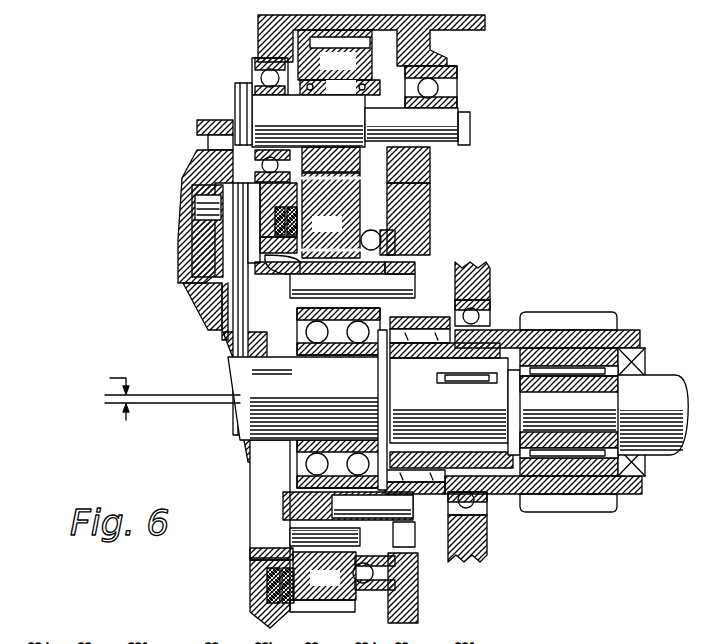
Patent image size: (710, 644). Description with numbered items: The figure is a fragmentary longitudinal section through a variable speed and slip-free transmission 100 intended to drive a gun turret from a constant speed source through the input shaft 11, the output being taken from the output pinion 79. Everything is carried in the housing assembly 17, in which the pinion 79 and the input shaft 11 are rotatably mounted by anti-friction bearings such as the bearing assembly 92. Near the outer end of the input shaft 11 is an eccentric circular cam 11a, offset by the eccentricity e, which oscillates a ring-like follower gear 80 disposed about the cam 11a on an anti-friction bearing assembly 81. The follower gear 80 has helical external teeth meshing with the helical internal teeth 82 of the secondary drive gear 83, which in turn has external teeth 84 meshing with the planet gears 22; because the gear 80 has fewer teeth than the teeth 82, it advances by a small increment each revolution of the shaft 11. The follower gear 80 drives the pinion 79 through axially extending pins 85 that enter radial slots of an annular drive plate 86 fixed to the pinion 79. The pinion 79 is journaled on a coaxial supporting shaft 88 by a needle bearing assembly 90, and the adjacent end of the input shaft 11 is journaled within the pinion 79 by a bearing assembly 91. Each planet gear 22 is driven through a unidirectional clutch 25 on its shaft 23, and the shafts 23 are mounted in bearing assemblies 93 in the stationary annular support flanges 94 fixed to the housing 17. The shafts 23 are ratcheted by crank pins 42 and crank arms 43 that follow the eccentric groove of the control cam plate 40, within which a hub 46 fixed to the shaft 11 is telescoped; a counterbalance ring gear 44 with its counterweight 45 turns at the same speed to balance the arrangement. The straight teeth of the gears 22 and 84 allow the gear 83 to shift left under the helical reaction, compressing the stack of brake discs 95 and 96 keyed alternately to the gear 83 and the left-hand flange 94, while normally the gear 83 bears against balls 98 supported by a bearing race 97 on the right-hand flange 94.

The housing assembly 17 is at (256, 37).
The planet gear 22 is at (346, 69).
The unidirectional clutch 25 is at (340, 87).
The shaft 23 is at (297, 117).
The anti-friction bearing assembly 93 is at (256, 78).
The crank arm 43 is at (240, 100).
The crank pin 42 is at (212, 142).
The control cam plate 40 is at (190, 176).
The counterweight 45 is at (208, 238).
The counterbalance ring gear 44 is at (200, 297).
The hub 46 is at (227, 345).
The helical external teeth of secondary drive gear 84 is at (325, 623).
The annular support flange 94 is at (263, 203).
The balls 98 is at (402, 225).
The anti-friction bearing race 97 is at (396, 242).
The secondary drive gear 83 is at (336, 233).
The follower gear 80 is at (321, 297).
The pins 85 is at (413, 285).
The annular drive plate 86 is at (417, 313).
The anti-friction bearing assembly 81 is at (300, 333).
The helical internal teeth 82 is at (300, 548).
The eccentric circular cam 11a is at (342, 390).
The input shaft 11 is at (414, 409).
The anti-friction bearing assembly 91 is at (461, 387).
The bearing assembly 92 is at (486, 317).
The output pinion 79 is at (612, 312).
The anti-friction needle bearing assembly 90 is at (583, 374).
The supporting shaft 88 is at (659, 401).
The brake disc 96 is at (270, 578).
The brake disc 95 is at (272, 595).
The variable speed and slip-free transmission 100 is at (507, 221).
The eccentricity e is at (170, 395).